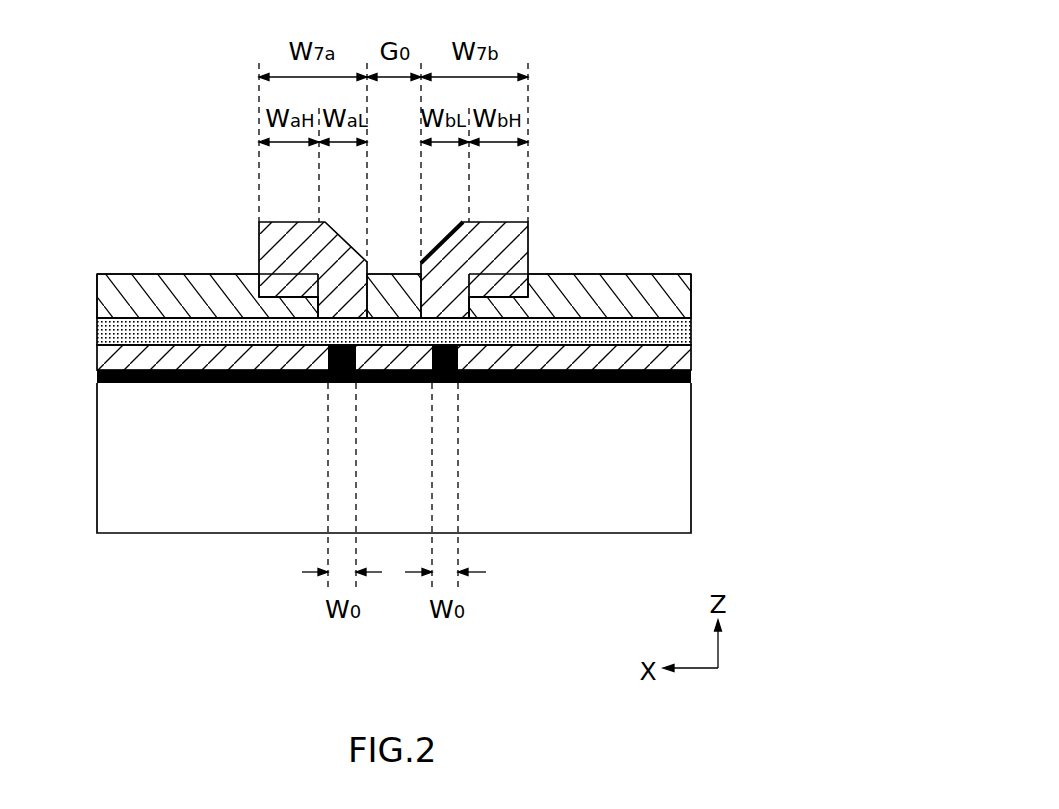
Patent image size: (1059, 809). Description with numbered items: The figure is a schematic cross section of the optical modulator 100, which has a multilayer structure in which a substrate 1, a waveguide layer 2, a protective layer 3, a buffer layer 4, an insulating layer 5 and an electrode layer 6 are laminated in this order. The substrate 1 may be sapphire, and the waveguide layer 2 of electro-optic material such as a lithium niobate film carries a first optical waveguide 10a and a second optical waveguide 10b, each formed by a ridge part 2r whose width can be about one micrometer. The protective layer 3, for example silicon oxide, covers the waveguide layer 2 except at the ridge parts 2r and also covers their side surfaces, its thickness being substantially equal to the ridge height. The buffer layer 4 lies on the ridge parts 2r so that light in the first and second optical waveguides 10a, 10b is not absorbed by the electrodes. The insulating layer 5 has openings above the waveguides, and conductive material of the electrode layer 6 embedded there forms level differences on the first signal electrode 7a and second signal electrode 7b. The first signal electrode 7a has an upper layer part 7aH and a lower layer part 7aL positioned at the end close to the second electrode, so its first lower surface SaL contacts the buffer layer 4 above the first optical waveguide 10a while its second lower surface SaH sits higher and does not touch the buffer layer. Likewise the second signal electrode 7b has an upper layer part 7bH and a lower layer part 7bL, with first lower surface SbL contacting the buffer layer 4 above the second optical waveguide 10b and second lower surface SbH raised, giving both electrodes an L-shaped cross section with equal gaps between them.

The optical modulator 100 is at (606, 36).
The substrate 1 is at (691, 458).
The waveguide layer 2 is at (691, 378).
The ridge part 2r is at (392, 479).
The protective layer 3 is at (691, 360).
The buffer layer 4 is at (691, 330).
The insulating layer 5 is at (691, 297).
The electrode layer 6 is at (640, 248).
The first signal electrode 7a is at (297, 222).
The upper layer part of the first signal electrode 7aH is at (259, 248).
The lower layer part of the first signal electrode 7aL is at (306, 296).
The second signal electrode 7b is at (489, 222).
The upper layer part of the second signal electrode 7bH is at (528, 249).
The lower layer part of the second signal electrode 7bL is at (476, 296).
The first optical waveguide 10a is at (328, 355).
The second optical waveguide 10b is at (458, 355).
The second lower surface of the first signal electrode SaH is at (288, 287).
The first lower surface of the first signal electrode SaL is at (330, 321).
The first lower surface of the second signal electrode SbL is at (455, 321).
The second lower surface of the second signal electrode SbH is at (500, 299).